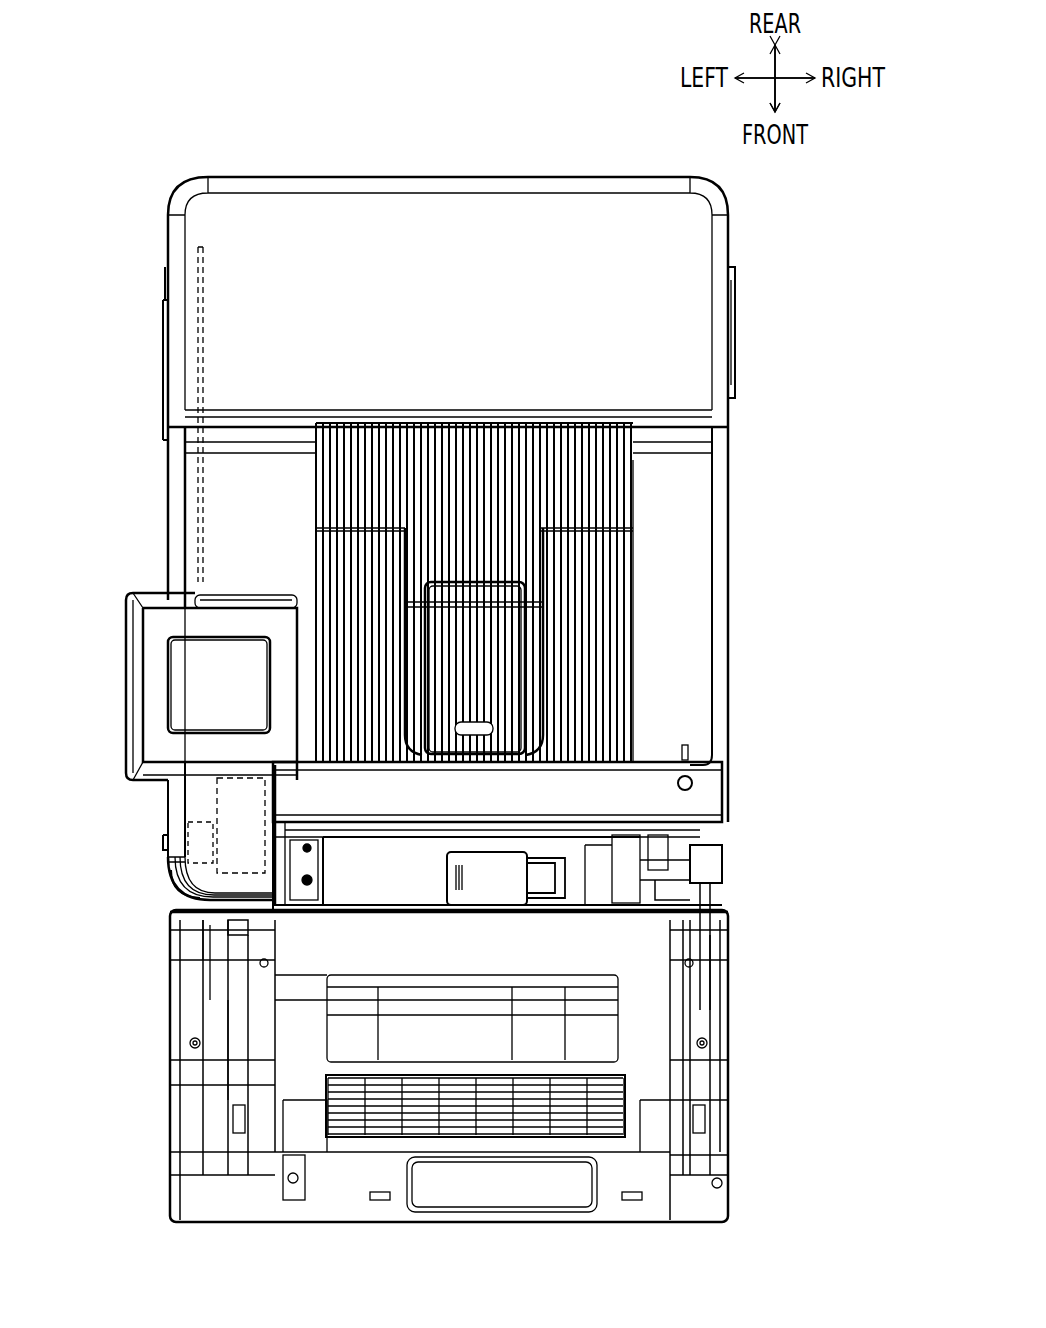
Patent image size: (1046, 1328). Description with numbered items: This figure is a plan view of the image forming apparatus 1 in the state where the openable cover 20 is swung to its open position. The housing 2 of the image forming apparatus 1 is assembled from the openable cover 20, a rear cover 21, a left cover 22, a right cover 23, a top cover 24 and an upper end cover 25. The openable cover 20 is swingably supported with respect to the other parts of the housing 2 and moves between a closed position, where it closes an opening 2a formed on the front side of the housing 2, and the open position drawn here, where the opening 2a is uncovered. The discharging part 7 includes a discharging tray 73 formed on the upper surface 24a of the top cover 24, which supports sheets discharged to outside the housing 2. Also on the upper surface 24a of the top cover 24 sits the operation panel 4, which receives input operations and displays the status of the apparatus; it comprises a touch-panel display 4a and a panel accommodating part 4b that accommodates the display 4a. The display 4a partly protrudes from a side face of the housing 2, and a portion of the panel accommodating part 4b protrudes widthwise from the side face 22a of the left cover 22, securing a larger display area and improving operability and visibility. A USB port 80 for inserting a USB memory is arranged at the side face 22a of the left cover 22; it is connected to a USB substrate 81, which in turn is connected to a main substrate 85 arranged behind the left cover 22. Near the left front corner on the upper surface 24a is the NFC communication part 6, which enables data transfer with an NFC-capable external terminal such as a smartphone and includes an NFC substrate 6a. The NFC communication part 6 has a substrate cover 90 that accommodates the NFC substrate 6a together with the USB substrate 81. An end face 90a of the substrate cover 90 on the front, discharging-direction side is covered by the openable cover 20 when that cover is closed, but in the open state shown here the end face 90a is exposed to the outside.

The image forming apparatus 1 is at (485, 96).
The housing 2 is at (555, 170).
The opening 2a is at (590, 882).
The operation panel 4 is at (190, 600).
The display 4a is at (195, 660).
The panel accommodating part 4b is at (133, 697).
The NFC communication part 6 is at (178, 795).
The NFC substrate 6a is at (230, 818).
The discharging part 7 is at (640, 465).
The openable cover 20 is at (170, 1075).
The rear cover 21 is at (440, 172).
The left cover 22 is at (165, 515).
The side face 22a is at (165, 470).
The right cover 23 is at (730, 523).
The top cover 24 is at (677, 655).
The upper surface 24a is at (660, 620).
The upper end cover 25 is at (680, 247).
The discharging tray 73 is at (610, 553).
The USB port 80 is at (162, 843).
The USB substrate 81 is at (165, 885).
The main substrate 85 is at (192, 333).
The substrate cover 90 is at (175, 905).
The end face 90a is at (237, 912).